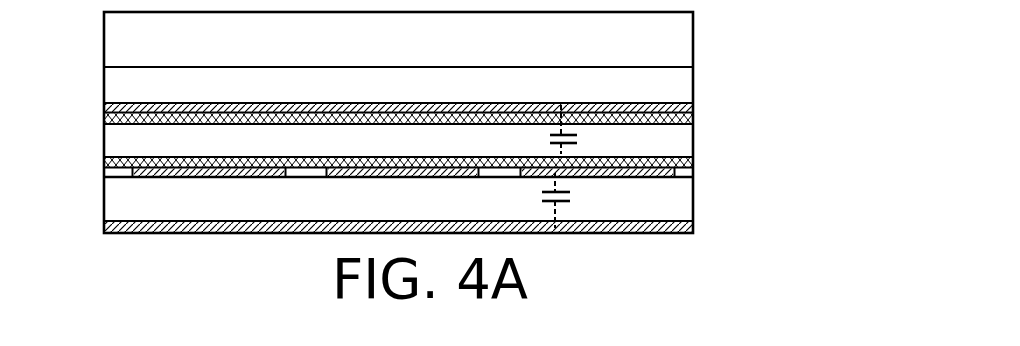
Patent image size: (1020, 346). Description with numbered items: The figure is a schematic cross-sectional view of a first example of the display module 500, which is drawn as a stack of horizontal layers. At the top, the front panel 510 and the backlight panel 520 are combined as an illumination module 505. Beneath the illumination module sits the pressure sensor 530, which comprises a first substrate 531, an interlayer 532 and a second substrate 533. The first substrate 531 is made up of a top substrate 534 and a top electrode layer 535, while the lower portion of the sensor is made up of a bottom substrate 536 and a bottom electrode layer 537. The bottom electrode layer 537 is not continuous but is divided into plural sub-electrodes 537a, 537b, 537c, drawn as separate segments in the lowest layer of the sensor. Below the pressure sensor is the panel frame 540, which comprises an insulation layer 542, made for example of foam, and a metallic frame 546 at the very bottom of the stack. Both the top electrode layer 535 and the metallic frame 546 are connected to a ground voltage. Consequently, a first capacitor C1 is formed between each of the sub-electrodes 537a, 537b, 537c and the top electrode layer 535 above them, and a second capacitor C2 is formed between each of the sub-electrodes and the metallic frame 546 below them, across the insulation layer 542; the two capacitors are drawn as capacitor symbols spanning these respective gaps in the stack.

The display module 500 is at (729, 26).
The illumination module 505 is at (363, 57).
The front panel 510 is at (155, 60).
The backlight panel 520 is at (398, 85).
The pressure sensor 530 is at (429, 152).
The first substrate 531 is at (464, 118).
The interlayer 532 is at (464, 176).
The second substrate 533 is at (156, 154).
The top substrate 534 is at (693, 119).
The top electrode layer 535 is at (693, 108).
The bottom substrate 536 is at (693, 161).
The bottom electrode layer 537 is at (436, 186).
The sub-electrode 537a is at (598, 178).
The sub-electrode 537b is at (374, 178).
The sub-electrode 537c is at (193, 178).
The panel frame 540 is at (402, 212).
The insulation layer 542 is at (693, 200).
The metallic frame 546 is at (693, 227).
The first capacitor C1 is at (545, 130).
The second capacitor C2 is at (536, 200).